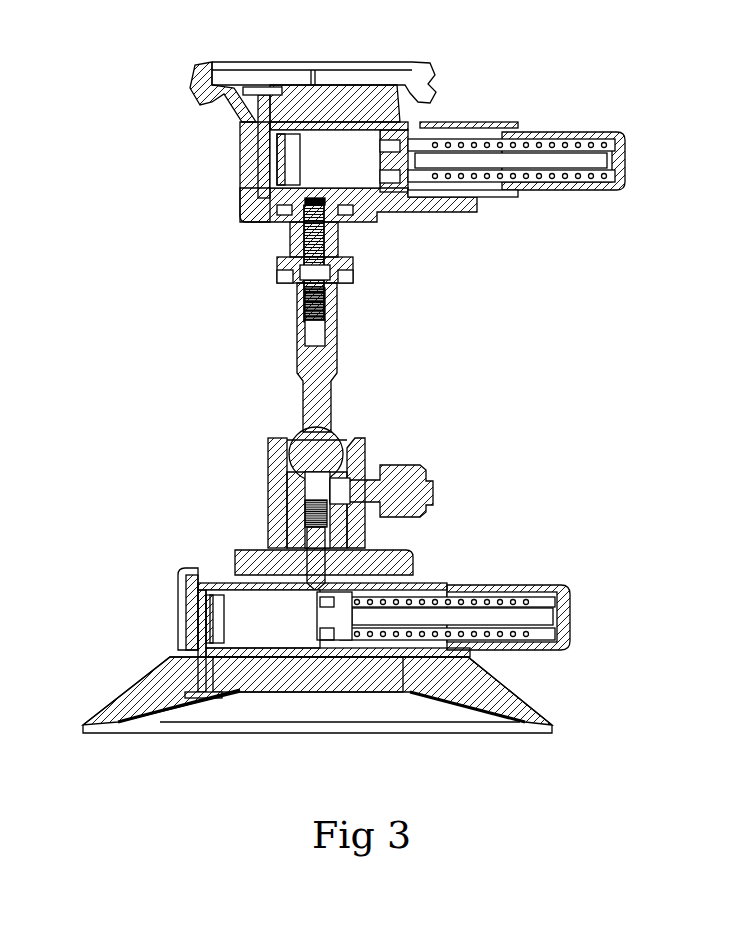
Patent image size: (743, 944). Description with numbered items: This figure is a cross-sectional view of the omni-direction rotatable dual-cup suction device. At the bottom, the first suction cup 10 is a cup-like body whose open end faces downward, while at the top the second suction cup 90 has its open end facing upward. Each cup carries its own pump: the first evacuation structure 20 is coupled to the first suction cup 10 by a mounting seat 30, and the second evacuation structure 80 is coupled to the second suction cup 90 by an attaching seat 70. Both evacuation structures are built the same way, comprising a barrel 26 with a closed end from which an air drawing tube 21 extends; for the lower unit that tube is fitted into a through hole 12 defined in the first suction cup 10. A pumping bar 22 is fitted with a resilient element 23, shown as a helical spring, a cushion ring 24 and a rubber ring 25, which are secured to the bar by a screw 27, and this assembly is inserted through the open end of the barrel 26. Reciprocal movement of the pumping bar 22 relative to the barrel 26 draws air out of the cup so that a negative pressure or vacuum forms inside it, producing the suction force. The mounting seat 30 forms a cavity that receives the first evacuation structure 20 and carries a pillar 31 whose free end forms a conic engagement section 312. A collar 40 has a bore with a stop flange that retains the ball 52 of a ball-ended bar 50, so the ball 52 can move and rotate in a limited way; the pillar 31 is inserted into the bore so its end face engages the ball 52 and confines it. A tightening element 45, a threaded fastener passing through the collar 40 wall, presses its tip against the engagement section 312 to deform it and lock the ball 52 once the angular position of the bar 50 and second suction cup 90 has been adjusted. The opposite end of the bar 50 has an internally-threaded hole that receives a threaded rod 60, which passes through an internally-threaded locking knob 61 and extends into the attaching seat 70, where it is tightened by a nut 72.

The first suction cup 10 is at (555, 728).
The through hole 12 is at (198, 690).
The first evacuation structure 20 is at (545, 583).
The air drawing tube 21 is at (190, 672).
The pumping bar 22 is at (575, 612).
The resilient element 23 is at (460, 598).
The cushion ring 24 is at (425, 583).
The rubber ring 25 is at (300, 542).
The barrel 26 is at (236, 570).
The screw 27 is at (322, 614).
The mounting seat 30 is at (205, 568).
The pillar 31 is at (268, 512).
The engagement section 312 is at (352, 485).
The collar 40 is at (356, 445).
The tightening element 45 is at (410, 490).
The ball-ended bar 50 is at (320, 372).
The ball 52 is at (310, 445).
The threaded rod 60 is at (327, 300).
The locking knob 61 is at (278, 272).
The attaching seat 70 is at (365, 210).
The nut 72 is at (265, 203).
The second evacuation structure 80 is at (604, 189).
The second suction cup 90 is at (388, 70).